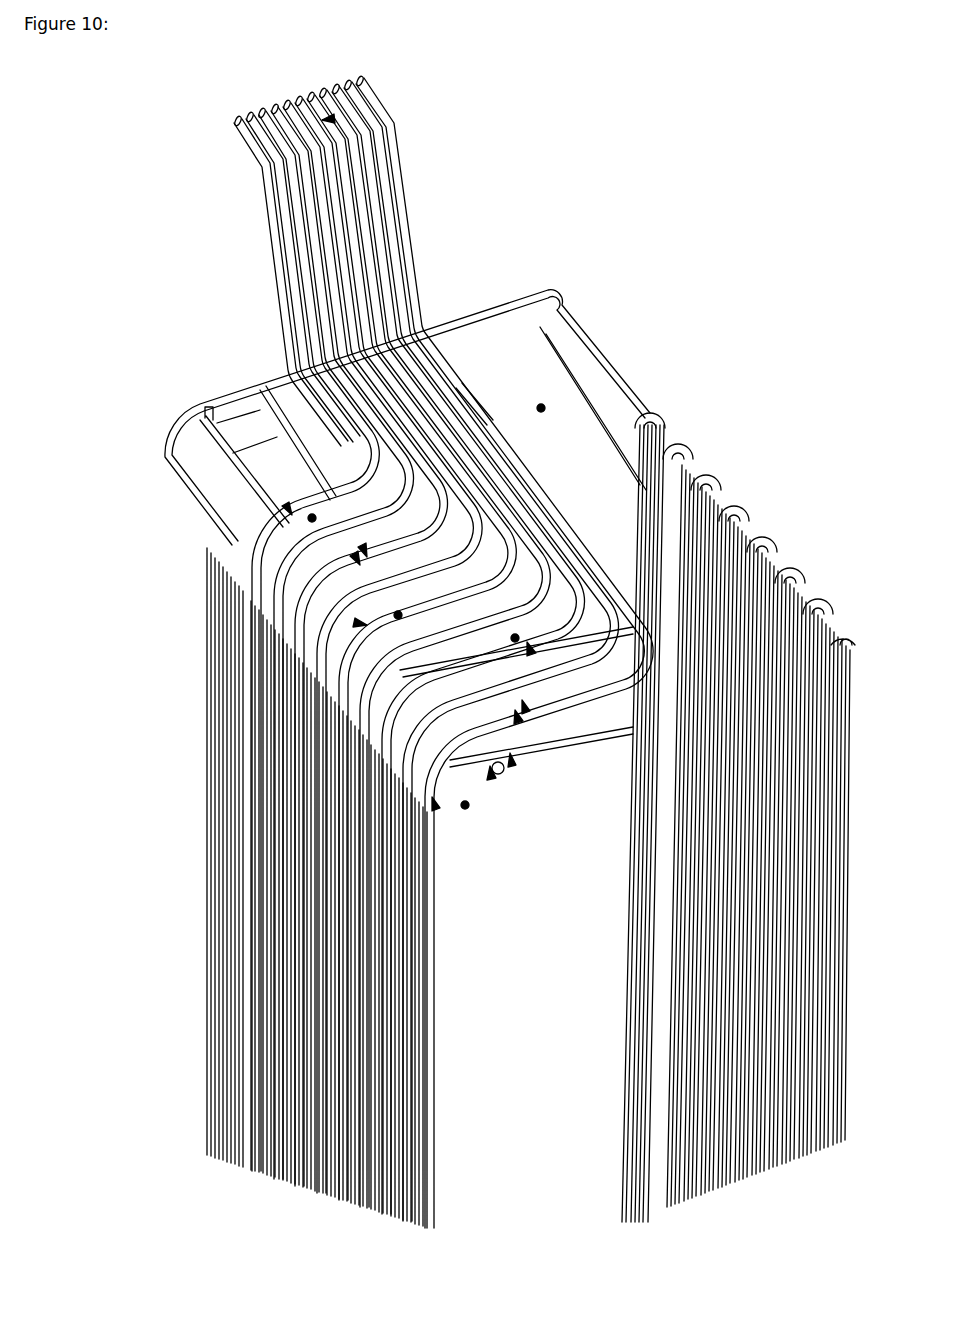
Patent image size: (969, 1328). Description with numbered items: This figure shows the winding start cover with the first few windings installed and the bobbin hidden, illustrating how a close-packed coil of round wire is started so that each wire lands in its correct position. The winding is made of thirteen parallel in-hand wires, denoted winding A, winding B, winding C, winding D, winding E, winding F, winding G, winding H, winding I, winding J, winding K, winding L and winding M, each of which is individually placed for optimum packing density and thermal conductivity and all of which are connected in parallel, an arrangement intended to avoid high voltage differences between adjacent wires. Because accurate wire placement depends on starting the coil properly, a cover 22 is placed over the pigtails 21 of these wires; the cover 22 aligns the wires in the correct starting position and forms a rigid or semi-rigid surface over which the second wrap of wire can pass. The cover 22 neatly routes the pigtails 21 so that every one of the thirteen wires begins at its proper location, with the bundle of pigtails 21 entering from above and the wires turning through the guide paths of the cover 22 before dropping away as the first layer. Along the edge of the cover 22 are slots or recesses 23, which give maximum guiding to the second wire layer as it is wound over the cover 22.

The pigtails 21 is at (335, 118).
The cover 22 is at (542, 410).
The slots or recesses 23 is at (436, 809).
The winding A is at (465, 805).
The winding B is at (492, 779).
The winding C is at (512, 766).
The winding D is at (519, 723).
The winding E is at (526, 712).
The winding F is at (515, 638).
The winding G is at (532, 654).
The winding H is at (354, 622).
The winding I is at (398, 615).
The winding J is at (354, 553).
The winding K is at (362, 545).
The winding L is at (312, 518).
The winding M is at (285, 504).